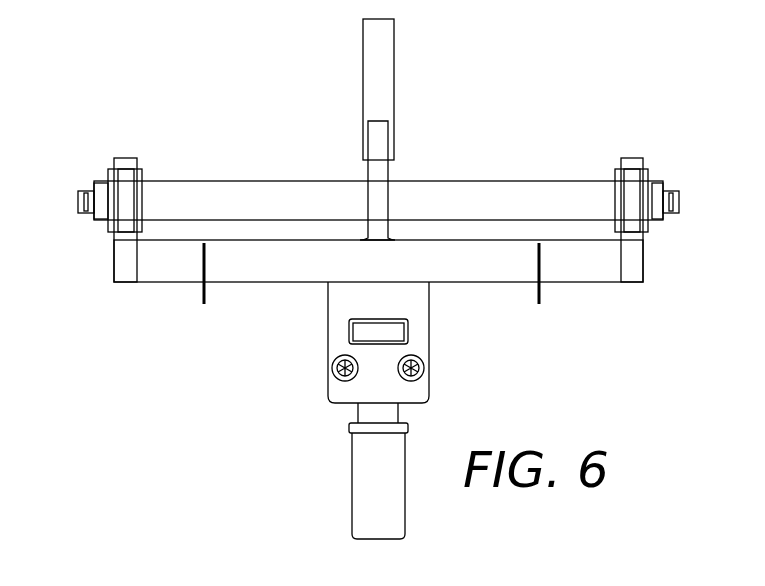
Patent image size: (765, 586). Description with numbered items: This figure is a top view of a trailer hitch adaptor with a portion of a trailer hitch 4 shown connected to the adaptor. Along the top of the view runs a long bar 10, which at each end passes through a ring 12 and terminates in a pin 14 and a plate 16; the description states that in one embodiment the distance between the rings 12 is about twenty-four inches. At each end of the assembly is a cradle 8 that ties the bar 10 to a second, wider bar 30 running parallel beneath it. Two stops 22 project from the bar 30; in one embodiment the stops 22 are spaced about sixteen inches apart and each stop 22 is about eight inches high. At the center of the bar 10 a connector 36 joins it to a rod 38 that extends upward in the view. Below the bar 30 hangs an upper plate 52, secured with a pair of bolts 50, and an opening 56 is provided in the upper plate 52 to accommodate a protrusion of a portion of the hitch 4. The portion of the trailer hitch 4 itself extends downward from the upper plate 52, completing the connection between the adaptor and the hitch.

The trailer hitch 4 is at (358, 410).
The cradle 8 is at (126, 283).
The bar 10 is at (268, 190).
The ring 12 is at (142, 172).
The pin 14 is at (78, 199).
The plate 16 is at (110, 222).
The stop 22 is at (200, 290).
The bar 30 is at (287, 265).
The connector 36 is at (380, 145).
The rod 38 is at (378, 72).
The bolt 50 is at (332, 358).
The upper plate 52 is at (432, 287).
The opening 56 is at (408, 324).